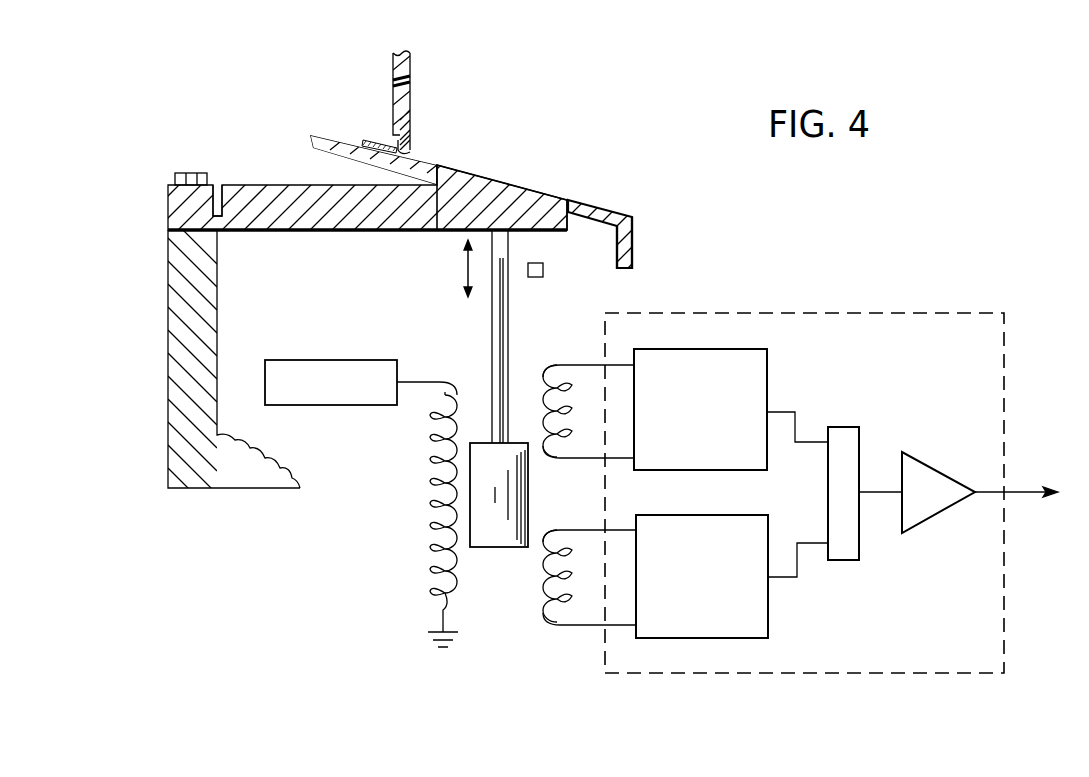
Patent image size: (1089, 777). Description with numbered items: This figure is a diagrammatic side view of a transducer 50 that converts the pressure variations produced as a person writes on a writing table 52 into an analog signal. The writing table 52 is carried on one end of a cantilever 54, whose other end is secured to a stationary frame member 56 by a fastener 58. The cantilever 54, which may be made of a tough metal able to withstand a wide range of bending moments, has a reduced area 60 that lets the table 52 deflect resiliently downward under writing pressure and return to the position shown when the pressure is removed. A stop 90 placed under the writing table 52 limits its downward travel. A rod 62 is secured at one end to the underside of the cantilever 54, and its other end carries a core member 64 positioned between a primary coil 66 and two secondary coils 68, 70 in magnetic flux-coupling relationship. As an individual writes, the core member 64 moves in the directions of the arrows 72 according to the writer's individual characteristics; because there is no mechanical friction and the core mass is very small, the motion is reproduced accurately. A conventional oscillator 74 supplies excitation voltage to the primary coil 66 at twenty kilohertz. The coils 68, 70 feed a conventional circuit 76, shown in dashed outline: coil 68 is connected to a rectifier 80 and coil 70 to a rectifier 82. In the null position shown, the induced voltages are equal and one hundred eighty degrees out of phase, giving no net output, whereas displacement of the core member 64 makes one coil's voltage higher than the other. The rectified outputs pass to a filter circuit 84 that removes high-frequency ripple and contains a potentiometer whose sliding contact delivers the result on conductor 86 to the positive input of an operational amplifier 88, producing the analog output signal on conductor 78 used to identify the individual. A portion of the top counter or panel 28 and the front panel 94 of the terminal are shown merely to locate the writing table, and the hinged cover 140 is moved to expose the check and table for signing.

The top counter or panel 28 is at (600, 207).
The transducer 50 is at (680, 286).
The writing table 52 is at (480, 176).
The cantilever 54 is at (270, 185).
The stationary frame member 56 is at (168, 333).
The fastener 58 is at (185, 173).
The reduced area 60 is at (217, 206).
The rod 62 is at (491, 316).
The core member 64 is at (508, 545).
The primary coil 66 is at (433, 452).
The coil 68 is at (543, 367).
The coil 70 is at (546, 617).
The arrows 72 is at (463, 265).
The oscillator 74 is at (343, 360).
The circuit 76 is at (872, 310).
The conductor 78 is at (1020, 490).
The rectifier 80 is at (768, 366).
The rectifier 82 is at (768, 628).
The filter circuit 84 is at (832, 427).
The conductor 86 is at (878, 490).
The operational amplifier 88 is at (940, 473).
The stop 90 is at (543, 271).
The front panel 94 is at (634, 246).
The hinged cover 140 is at (413, 85).